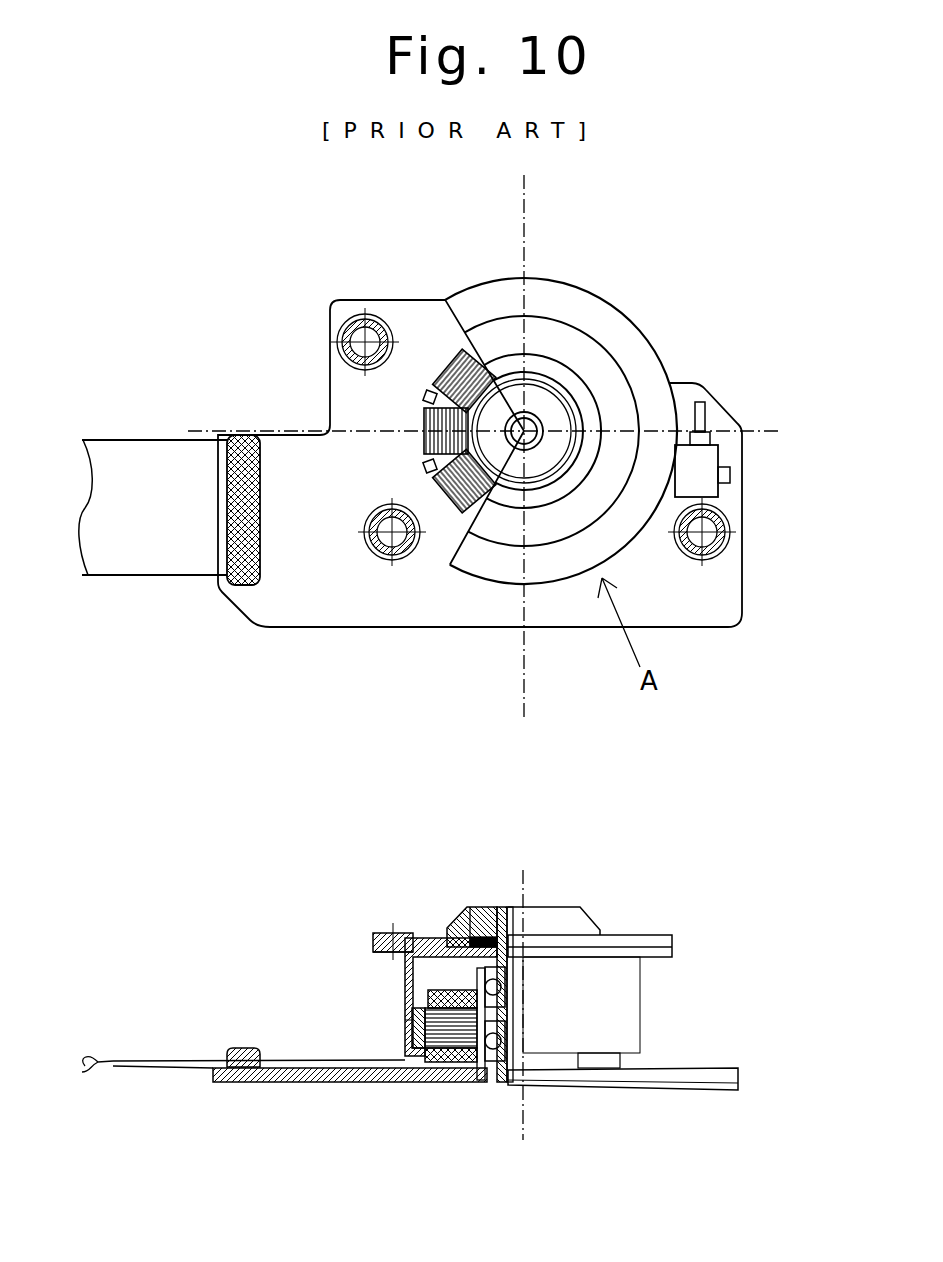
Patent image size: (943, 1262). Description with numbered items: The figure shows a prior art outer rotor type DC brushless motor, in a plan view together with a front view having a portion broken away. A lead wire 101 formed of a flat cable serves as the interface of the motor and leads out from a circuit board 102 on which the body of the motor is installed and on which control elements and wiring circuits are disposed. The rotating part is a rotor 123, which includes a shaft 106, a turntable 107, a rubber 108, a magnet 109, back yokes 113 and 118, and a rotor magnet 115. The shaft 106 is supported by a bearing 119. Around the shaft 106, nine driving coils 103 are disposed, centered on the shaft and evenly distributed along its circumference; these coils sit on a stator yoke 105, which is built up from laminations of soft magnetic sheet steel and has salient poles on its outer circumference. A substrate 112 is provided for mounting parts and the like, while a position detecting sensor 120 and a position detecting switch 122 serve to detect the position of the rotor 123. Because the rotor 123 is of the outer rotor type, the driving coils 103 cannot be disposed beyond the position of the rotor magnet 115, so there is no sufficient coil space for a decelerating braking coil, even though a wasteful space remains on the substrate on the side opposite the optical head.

The lead wire 101 is at (113, 457).
The circuit board 102 is at (272, 462).
The driving coil 103 is at (470, 330).
The stator yoke 105 is at (413, 1083).
The shaft 106 is at (552, 375).
The turntable 107 is at (578, 362).
The rubber 108 is at (625, 348).
The magnet 109 is at (575, 417).
The substrate 112 is at (265, 1083).
The back yoke 113 is at (377, 955).
The rotor magnet 115 is at (405, 1028).
The back yoke 118 is at (457, 923).
The bearing 119 is at (503, 1037).
The position detecting sensor 120 is at (422, 393).
The position detecting switch 122 is at (695, 470).
The rotor 123 is at (602, 214).